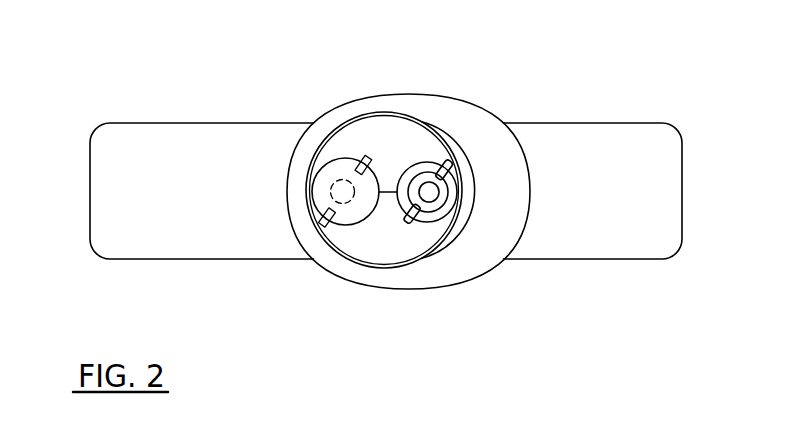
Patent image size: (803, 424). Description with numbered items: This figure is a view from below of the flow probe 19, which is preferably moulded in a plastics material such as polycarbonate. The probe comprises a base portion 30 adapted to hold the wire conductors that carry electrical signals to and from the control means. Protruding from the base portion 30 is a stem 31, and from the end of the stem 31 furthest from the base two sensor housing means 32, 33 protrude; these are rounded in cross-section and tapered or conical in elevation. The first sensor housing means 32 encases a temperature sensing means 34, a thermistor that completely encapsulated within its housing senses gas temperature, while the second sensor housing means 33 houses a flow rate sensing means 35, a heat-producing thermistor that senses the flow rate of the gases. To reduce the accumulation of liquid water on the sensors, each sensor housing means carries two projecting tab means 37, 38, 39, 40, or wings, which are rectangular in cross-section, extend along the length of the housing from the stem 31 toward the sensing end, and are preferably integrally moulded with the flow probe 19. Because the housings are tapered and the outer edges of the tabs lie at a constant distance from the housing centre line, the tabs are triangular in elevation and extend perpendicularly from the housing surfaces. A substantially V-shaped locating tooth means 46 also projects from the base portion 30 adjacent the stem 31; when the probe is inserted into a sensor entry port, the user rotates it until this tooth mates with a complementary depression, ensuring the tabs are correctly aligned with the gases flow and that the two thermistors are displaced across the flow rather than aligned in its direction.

The flow probe 19 is at (250, 89).
The base portion 30 is at (386, 191).
The stem 31 is at (392, 112).
The sensor housing means 32 is at (353, 226).
The sensor housing means 33 is at (426, 223).
The temperature sensing means 34 is at (341, 177).
The flow rate sensing means 35 is at (424, 184).
The projecting tab means 37 is at (452, 159).
The projecting tab means 38 is at (364, 158).
The projecting tab means 39 is at (407, 225).
The projecting tab means 40 is at (327, 228).
The locating tooth means 46 is at (464, 190).